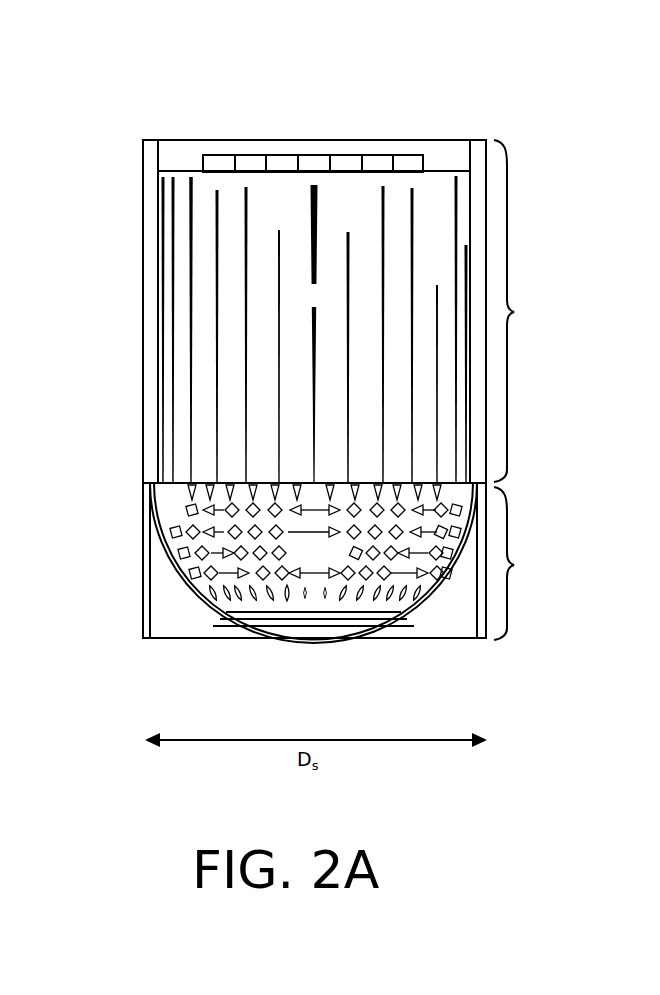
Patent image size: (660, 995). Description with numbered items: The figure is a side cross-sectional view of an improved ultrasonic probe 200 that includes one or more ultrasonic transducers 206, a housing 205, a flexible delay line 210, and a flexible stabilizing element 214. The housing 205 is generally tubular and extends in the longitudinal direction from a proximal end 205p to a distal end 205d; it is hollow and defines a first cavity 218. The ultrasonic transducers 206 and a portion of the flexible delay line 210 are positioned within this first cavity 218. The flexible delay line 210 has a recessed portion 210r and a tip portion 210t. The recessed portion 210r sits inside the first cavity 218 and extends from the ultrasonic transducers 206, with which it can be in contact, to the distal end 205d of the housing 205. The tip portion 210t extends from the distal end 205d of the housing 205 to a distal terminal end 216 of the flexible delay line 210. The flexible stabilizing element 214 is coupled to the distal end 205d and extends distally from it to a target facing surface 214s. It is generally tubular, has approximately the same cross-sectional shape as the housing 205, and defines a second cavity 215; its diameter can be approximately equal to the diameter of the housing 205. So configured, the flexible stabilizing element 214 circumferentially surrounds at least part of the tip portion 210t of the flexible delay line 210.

The ultrasonic probe 200 is at (472, 96).
The housing 205 is at (152, 180).
The proximal end 205p is at (508, 141).
The distal end 205d is at (505, 484).
The ultrasonic transducers 206 is at (228, 155).
The flexible delay line 210 is at (245, 360).
The recessed portion 210r is at (342, 304).
The tip portion 210t is at (343, 562).
The flexible stabilizing element 214 is at (170, 613).
The target facing surface 214s is at (458, 639).
The second cavity 215 is at (527, 576).
The distal terminal end 216 is at (337, 655).
The first cavity 218 is at (526, 323).